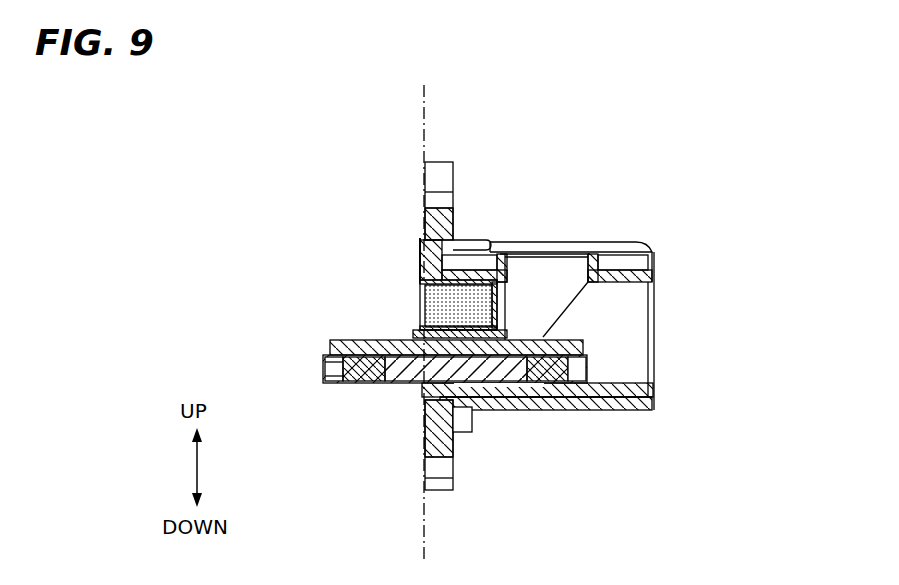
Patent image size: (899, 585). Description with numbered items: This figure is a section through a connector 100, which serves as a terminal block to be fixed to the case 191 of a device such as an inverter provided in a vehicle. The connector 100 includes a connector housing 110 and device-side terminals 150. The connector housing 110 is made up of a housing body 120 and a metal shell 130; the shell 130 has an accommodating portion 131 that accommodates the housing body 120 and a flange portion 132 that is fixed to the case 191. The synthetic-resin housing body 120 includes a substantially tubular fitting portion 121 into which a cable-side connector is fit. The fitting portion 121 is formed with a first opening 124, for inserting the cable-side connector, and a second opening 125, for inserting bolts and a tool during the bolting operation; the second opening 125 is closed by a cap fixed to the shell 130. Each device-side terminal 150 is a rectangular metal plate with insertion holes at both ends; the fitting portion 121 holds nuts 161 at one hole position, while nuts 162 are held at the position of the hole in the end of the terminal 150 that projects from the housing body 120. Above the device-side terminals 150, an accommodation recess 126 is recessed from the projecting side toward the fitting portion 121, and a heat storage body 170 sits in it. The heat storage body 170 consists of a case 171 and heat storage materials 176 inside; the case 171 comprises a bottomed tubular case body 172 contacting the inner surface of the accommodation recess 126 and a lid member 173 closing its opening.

The connector 100 is at (682, 171).
The connector housing 110 is at (628, 230).
The housing body 120 is at (654, 262).
The fitting portion 121 is at (614, 404).
The first opening 124 is at (640, 325).
The second opening 125 is at (582, 252).
The accommodation recess 126 is at (472, 247).
The shell 130 is at (548, 156).
The accommodating portion 131 is at (524, 243).
The flange portion 132 is at (455, 177).
The device-side terminal 150 is at (338, 342).
The nut 161 is at (586, 368).
The nut 162 is at (322, 368).
The heat storage body 170 is at (432, 258).
The case 171 is at (344, 258).
The case body 172 is at (422, 282).
The lid member 173 is at (424, 308).
The heat storage material 176 is at (414, 334).
The case 191 is at (428, 104).